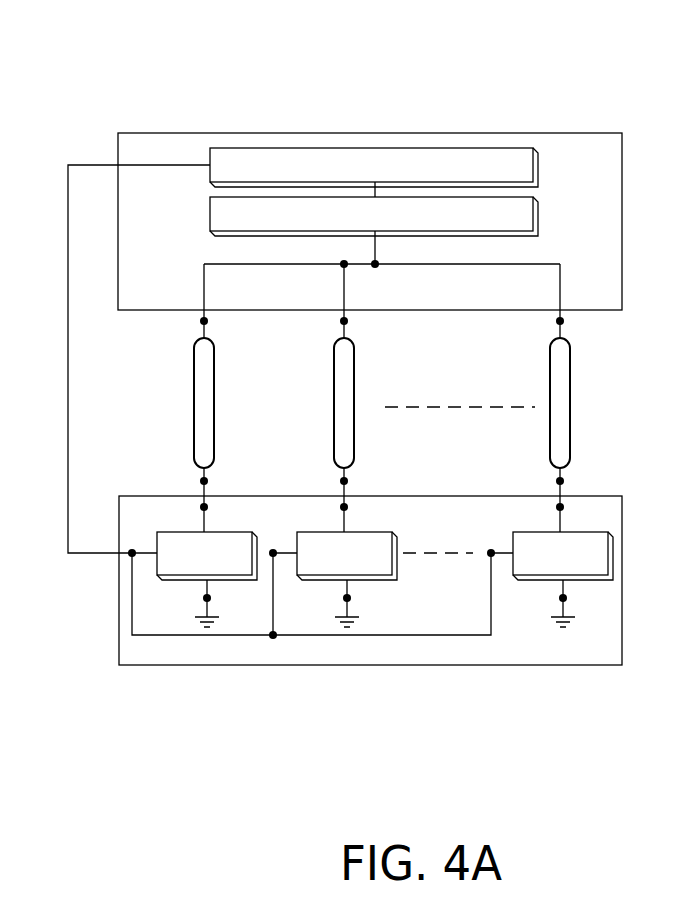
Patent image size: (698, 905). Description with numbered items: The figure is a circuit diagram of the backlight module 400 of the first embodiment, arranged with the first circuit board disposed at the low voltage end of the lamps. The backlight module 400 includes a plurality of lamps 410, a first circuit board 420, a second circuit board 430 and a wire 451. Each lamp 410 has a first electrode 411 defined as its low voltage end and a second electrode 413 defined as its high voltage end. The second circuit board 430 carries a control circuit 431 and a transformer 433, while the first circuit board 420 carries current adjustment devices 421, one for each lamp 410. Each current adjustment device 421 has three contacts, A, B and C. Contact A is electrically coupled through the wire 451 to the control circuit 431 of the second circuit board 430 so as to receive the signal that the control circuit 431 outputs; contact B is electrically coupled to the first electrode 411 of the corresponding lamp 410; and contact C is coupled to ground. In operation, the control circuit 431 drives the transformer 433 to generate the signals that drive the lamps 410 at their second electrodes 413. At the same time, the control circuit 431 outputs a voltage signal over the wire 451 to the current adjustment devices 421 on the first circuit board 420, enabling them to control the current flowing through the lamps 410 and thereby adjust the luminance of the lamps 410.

The backlight module 400 is at (577, 709).
The lamp 410 is at (557, 413).
The first electrode 411 is at (563, 481).
The second electrode 413 is at (563, 322).
The first circuit board 420 is at (207, 665).
The current adjustment device 421 is at (605, 553).
The second circuit board 430 is at (175, 132).
The control circuit 431 is at (455, 160).
The transformer 433 is at (517, 215).
The wire 451 is at (68, 386).